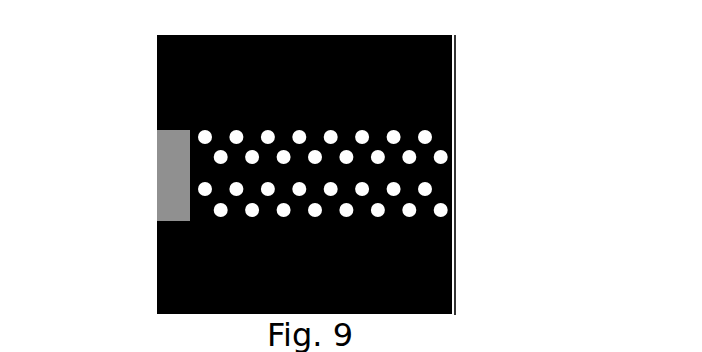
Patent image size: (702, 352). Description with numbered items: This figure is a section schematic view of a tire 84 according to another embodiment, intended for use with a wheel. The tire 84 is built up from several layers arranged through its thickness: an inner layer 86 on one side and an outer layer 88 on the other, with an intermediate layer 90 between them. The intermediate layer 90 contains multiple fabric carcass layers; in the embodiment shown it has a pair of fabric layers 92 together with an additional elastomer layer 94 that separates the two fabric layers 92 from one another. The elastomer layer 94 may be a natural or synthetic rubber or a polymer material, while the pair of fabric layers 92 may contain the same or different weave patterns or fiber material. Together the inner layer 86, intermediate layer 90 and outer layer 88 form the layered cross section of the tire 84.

The tire 84 is at (521, 77).
The inner layer 86 is at (152, 283).
The outer layer 88 is at (157, 71).
The intermediate layer 90 is at (140, 133).
The fabric layers 92 is at (457, 149).
The elastomer layer 94 is at (457, 177).